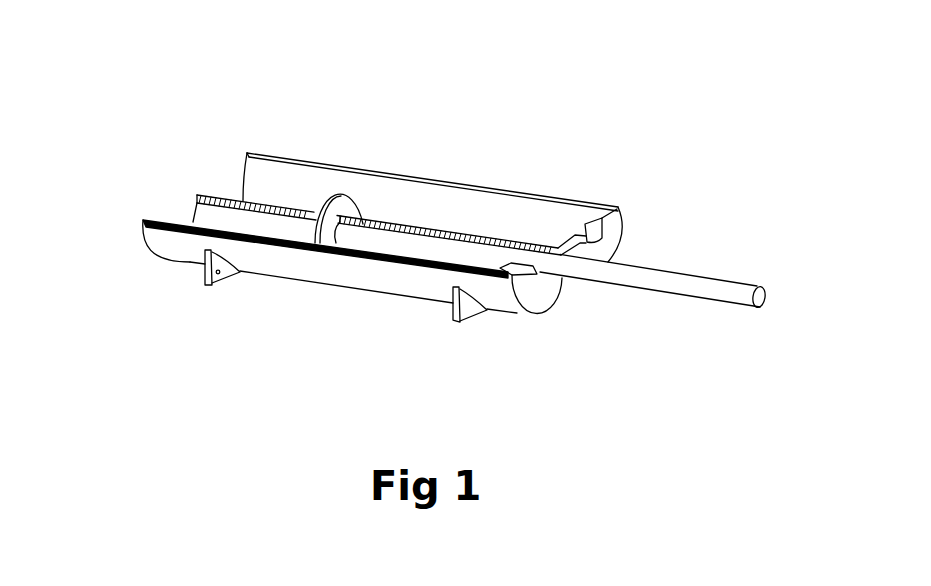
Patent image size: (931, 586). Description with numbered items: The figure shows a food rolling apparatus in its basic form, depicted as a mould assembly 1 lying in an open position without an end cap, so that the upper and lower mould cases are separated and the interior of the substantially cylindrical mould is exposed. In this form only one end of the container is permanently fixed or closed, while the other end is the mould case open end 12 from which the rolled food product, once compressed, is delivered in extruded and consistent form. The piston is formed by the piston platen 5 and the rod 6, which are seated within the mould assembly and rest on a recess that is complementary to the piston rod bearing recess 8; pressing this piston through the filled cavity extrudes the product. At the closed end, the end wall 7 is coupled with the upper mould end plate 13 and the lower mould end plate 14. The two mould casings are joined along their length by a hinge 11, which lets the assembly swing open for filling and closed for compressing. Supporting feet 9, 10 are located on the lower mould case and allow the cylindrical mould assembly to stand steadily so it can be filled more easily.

The mould assembly 1 is at (265, 77).
The piston platen 5 is at (340, 190).
The rod 6 is at (690, 282).
The end wall 7 is at (605, 212).
The recess 8 is at (583, 225).
The supporting foot 9 is at (467, 313).
The supporting foot 10 is at (204, 268).
The hinge 11 is at (433, 223).
The open end 12 is at (260, 173).
The upper mould end plate 13 is at (612, 228).
The lower mould end plate 14 is at (538, 298).